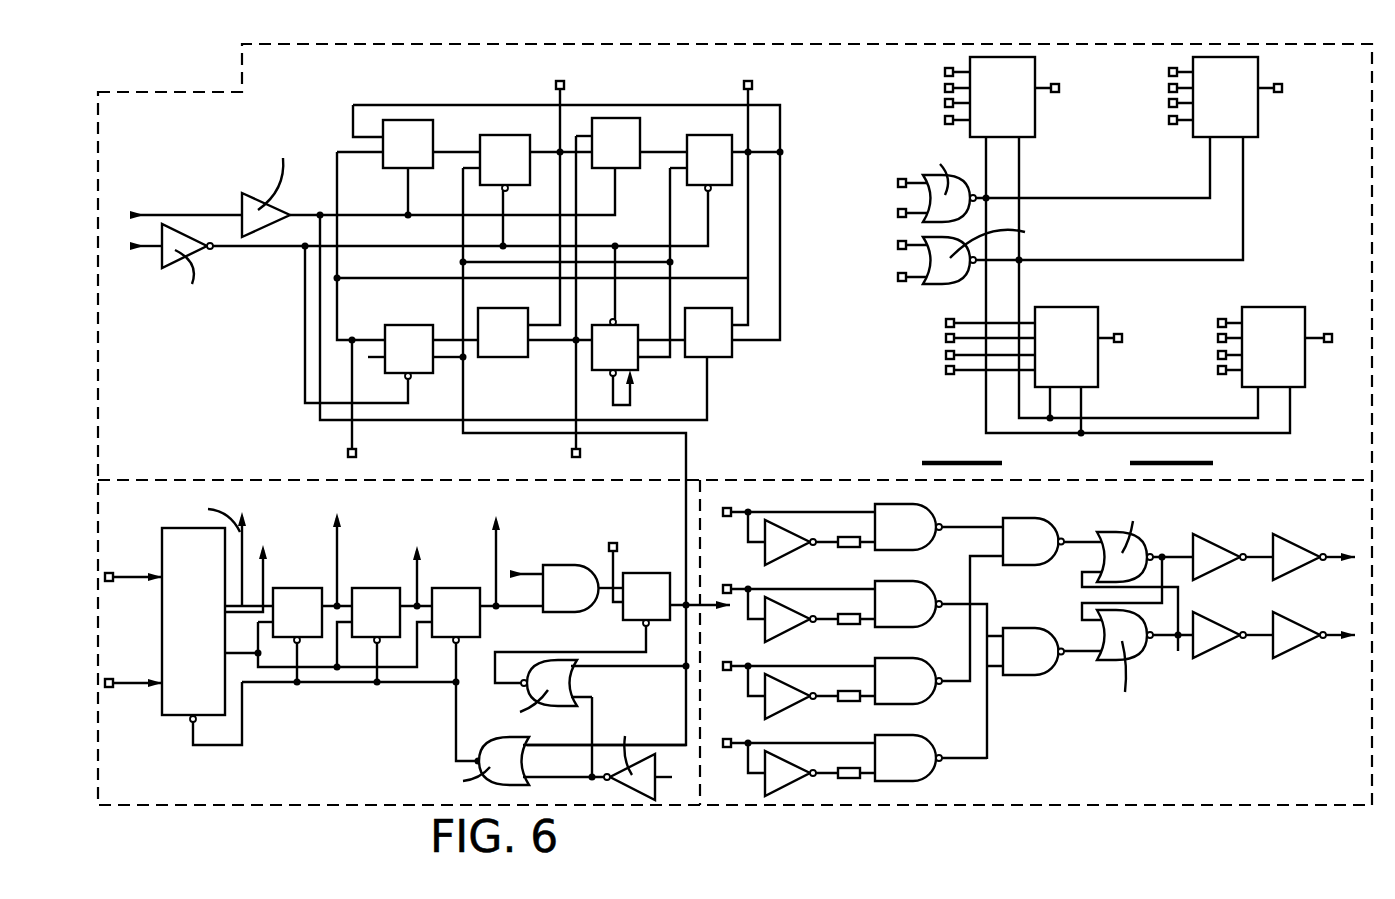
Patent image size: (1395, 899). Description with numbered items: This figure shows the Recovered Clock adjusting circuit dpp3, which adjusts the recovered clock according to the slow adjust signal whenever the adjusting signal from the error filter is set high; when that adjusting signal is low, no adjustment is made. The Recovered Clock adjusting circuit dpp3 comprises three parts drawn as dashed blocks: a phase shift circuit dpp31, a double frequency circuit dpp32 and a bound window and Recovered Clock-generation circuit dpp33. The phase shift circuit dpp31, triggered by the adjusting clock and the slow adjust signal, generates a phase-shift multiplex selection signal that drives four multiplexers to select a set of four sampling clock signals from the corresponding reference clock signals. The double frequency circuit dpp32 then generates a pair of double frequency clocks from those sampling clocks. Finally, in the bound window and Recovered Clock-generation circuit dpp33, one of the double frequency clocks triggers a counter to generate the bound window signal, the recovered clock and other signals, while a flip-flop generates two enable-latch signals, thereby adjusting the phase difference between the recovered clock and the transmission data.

The Recovered Clock adjusting circuit dpp3 is at (858, 832).
The phase shift circuit dpp31 is at (128, 110).
The double frequency circuit dpp32 is at (1150, 780).
The bound window and Recovered Clock-generation circuit dpp33 is at (337, 790).